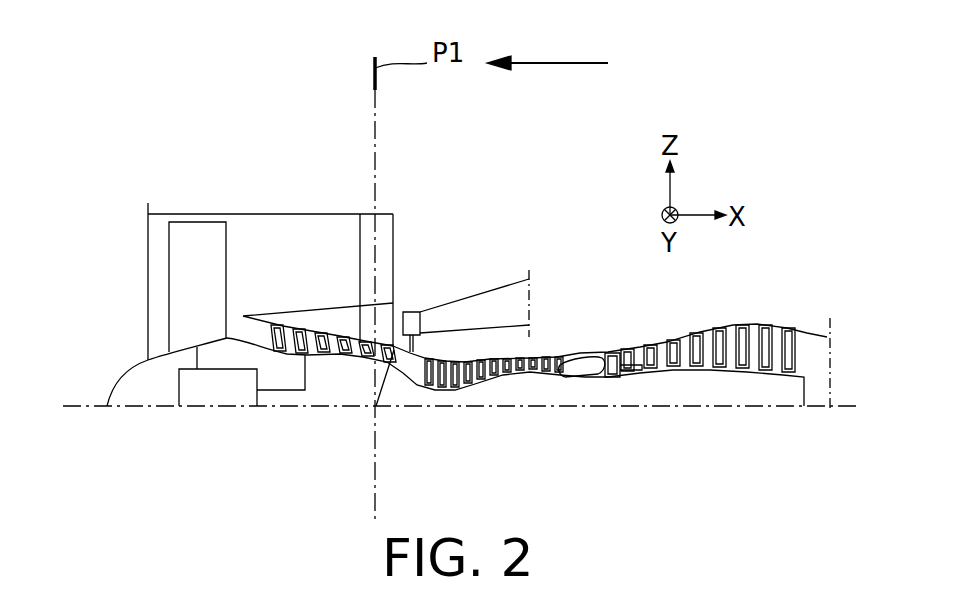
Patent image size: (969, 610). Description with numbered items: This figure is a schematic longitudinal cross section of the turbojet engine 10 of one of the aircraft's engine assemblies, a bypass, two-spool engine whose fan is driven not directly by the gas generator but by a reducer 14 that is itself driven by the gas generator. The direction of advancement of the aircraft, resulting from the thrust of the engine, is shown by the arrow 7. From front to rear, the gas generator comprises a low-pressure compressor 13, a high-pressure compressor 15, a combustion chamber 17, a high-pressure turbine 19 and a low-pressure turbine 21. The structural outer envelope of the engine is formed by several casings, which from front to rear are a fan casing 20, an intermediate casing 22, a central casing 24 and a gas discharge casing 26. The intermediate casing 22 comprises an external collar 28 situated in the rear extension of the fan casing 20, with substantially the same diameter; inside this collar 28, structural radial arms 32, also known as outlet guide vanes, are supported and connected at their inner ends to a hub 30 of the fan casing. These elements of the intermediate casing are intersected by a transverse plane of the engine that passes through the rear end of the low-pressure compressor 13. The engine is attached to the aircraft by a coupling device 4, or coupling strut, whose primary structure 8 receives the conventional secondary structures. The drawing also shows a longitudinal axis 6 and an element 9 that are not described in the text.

The coupling device 4 is at (505, 275).
The axis of rotation 6 is at (72, 407).
The arrow 7 is at (553, 65).
The primary structure 8 is at (534, 295).
The inner block 9 is at (185, 268).
The turbojet engine 10 is at (316, 165).
The low-pressure compressor 13 is at (355, 360).
The reducer 14 is at (203, 407).
The high-pressure compressor 15 is at (467, 367).
The combustion chamber 17 is at (587, 375).
The high-pressure turbine 19 is at (630, 372).
The fan casing 20 is at (202, 213).
The low-pressure turbine 21 is at (668, 366).
The intermediate casing 22 is at (405, 235).
The central casing 24 is at (403, 406).
The gas discharge casing 26 is at (822, 337).
The external collar 28 is at (368, 213).
The hub 30 is at (370, 323).
The structural radial arms 32 is at (375, 262).